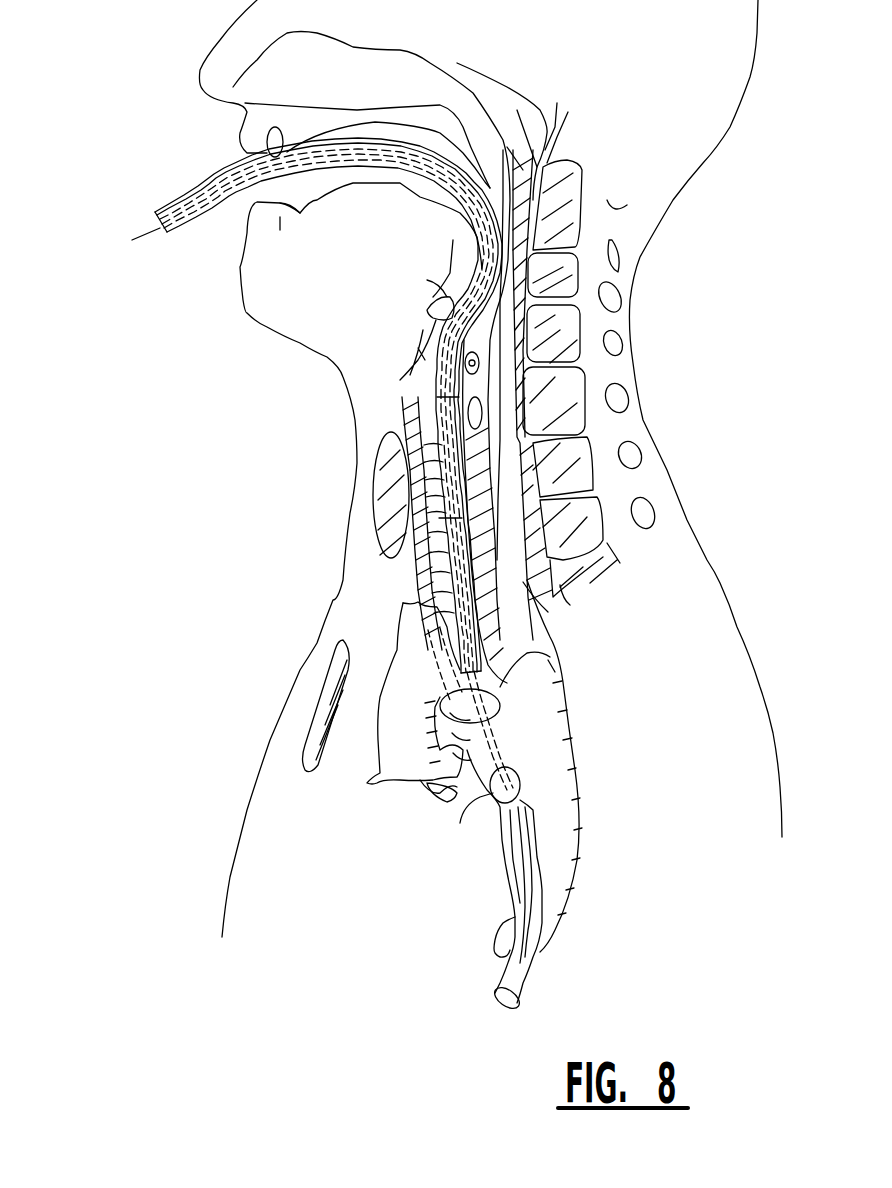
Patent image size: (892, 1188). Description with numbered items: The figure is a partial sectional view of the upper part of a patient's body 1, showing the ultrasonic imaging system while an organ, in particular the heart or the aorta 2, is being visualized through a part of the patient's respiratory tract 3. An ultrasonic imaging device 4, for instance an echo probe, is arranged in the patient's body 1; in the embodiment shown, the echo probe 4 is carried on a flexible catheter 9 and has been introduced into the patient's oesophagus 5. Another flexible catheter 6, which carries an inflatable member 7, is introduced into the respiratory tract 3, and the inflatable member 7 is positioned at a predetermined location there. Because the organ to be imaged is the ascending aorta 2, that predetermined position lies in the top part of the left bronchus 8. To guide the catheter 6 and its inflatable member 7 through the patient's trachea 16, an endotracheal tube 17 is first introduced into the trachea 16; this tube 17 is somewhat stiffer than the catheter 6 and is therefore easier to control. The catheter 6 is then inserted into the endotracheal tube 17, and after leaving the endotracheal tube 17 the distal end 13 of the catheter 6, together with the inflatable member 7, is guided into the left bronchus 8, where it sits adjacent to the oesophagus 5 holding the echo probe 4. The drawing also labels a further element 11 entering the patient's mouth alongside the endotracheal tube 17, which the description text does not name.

The patient's body 1 is at (225, 737).
The aorta 2 is at (405, 690).
The respiratory tract 3 is at (299, 428).
The ultrasonic imaging device 4 is at (505, 640).
The oesophagus 5 is at (503, 708).
The flexible catheter 6 is at (158, 232).
The inflatable member 7 is at (500, 793).
The left bronchus 8 is at (535, 745).
The flexible catheter 9 is at (497, 328).
The tube 11 is at (140, 233).
The distal end 13 is at (520, 798).
The trachea 16 is at (428, 518).
The endotracheal tube 17 is at (437, 397).